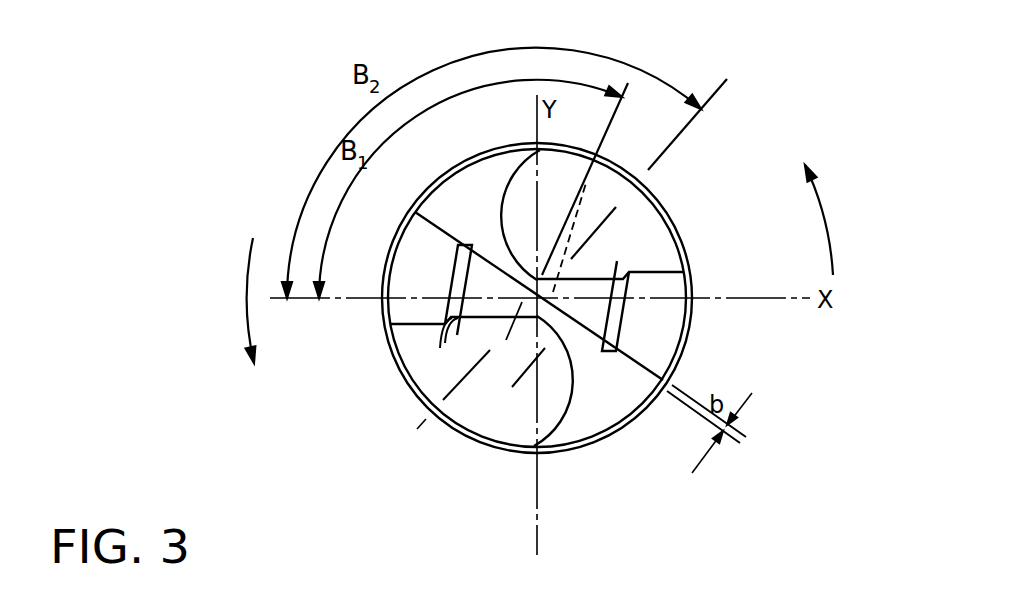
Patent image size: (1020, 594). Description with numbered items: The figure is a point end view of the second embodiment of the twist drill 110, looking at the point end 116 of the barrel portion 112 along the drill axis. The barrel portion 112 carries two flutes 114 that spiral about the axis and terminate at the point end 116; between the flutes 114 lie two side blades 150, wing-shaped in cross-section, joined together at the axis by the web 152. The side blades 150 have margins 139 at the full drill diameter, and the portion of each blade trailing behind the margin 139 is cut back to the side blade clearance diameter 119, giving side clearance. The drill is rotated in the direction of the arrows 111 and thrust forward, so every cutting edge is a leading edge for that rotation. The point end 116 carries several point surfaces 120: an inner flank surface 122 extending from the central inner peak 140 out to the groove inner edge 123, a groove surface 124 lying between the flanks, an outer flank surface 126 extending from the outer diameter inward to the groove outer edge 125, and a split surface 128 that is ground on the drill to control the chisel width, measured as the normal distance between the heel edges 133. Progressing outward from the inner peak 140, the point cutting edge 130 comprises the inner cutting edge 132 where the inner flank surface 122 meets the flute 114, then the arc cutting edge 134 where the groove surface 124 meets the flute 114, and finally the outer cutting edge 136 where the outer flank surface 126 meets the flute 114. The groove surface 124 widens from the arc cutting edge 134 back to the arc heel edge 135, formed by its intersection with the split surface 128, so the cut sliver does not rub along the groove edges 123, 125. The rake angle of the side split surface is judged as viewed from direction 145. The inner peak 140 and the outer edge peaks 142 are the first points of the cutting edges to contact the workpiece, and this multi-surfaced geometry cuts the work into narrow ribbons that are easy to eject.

The twist drill 110 is at (388, 377).
The arrows 111 is at (246, 268).
The barrel portion 112 is at (649, 170).
The flutes 114 is at (641, 212).
The point end 116 is at (512, 360).
The side blade clearance diameter 119 is at (608, 432).
The point surfaces 120 is at (490, 170).
The inner flank surface 122 is at (509, 240).
The groove inner edge 123 is at (474, 244).
The groove surface 124 is at (628, 271).
The groove outer edge 125 is at (456, 259).
The outer flank surface 126 is at (393, 238).
The split surface 128 is at (517, 158).
The point cutting edge 130 is at (616, 261).
The inner cutting edge 132 is at (561, 261).
The heel edges 133 is at (553, 381).
The arc cutting edge 134 is at (464, 375).
The arc heel edge 135 is at (607, 354).
The outer cutting edge 136 is at (688, 249).
The margins 139 is at (690, 280).
The inner peak 140 is at (503, 326).
The edge peaks 142 is at (388, 311).
The viewing direction 145 is at (408, 444).
The side blades 150 is at (462, 176).
The web 152 is at (509, 380).